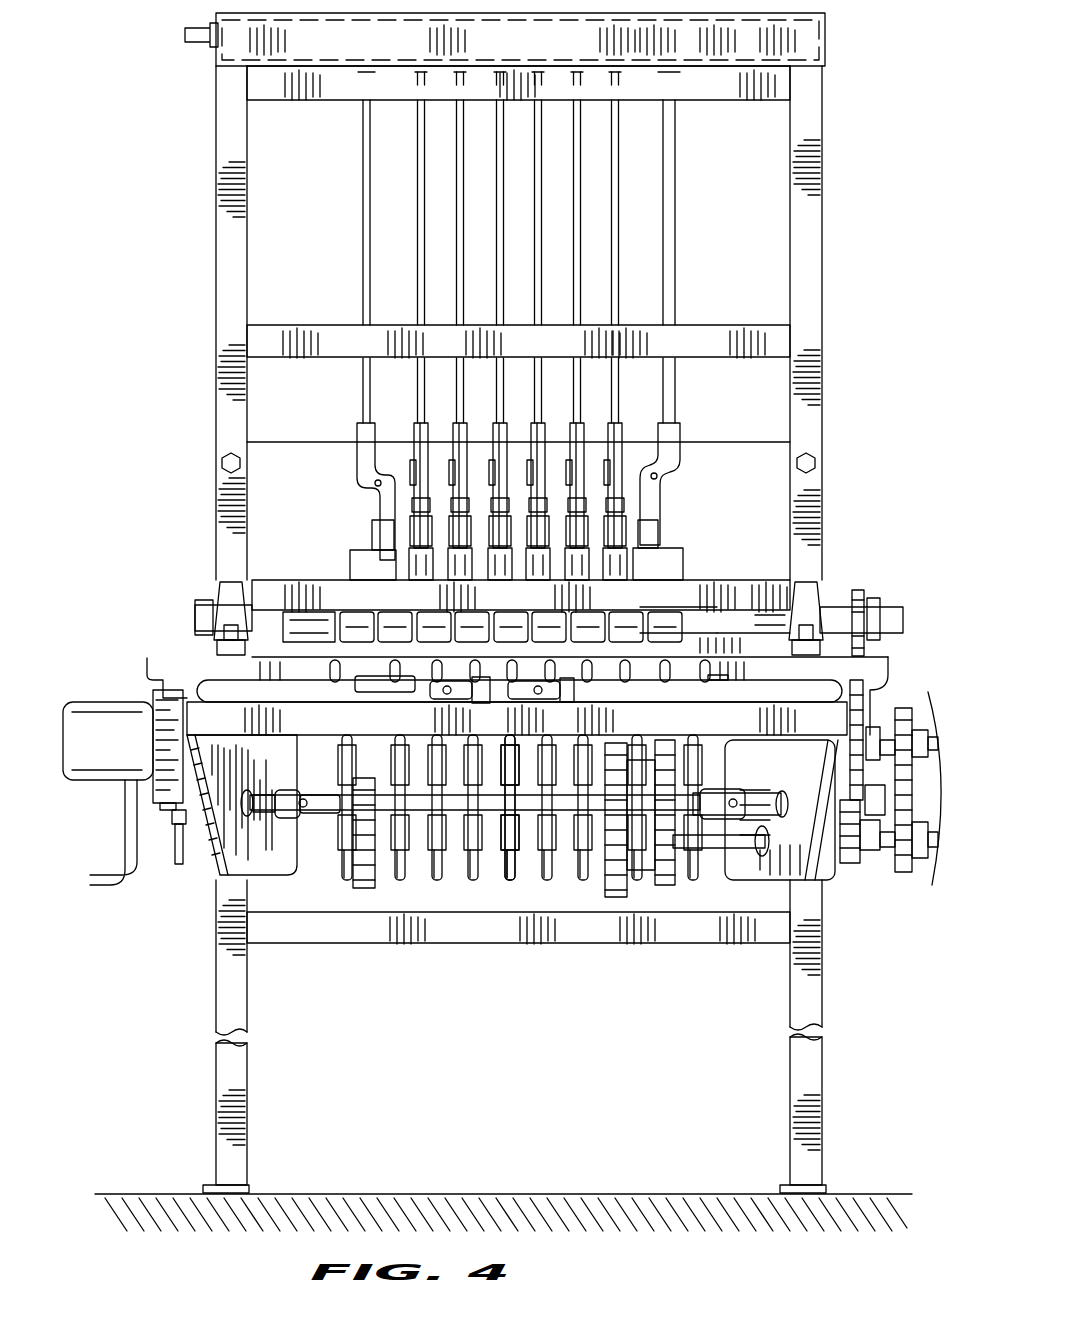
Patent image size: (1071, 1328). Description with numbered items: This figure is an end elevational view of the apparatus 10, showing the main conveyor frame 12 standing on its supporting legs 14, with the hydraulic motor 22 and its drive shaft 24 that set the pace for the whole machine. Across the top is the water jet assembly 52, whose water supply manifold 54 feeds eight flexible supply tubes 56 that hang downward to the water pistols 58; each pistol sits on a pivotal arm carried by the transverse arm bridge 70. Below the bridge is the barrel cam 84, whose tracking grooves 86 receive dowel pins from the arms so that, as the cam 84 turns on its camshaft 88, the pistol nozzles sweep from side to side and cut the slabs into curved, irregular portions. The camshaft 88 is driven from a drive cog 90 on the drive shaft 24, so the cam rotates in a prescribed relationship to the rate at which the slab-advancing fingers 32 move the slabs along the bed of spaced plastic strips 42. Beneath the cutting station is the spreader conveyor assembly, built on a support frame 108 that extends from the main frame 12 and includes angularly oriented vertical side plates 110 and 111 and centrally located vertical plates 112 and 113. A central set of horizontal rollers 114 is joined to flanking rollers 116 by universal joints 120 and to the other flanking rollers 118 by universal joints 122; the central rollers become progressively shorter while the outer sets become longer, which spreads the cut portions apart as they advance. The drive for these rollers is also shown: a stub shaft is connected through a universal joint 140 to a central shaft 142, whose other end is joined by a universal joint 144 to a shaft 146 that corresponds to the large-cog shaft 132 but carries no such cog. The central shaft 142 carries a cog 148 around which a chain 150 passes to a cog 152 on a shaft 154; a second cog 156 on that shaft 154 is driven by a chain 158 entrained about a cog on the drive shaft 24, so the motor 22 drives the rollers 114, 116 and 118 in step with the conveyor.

The apparatus 10 is at (198, 292).
The main conveyor frame 12 is at (455, 945).
The supporting legs 14 is at (245, 1138).
The hydraulic motor 22 is at (100, 705).
The drive shaft 24 is at (932, 740).
The slab-advancing fingers 32 is at (515, 882).
The plastic strips 42 is at (375, 680).
The water jet assembly 52 is at (670, 532).
The water supply manifold 54 is at (826, 40).
The flexible supply tubes 56 is at (372, 177).
The water pistols 58 is at (370, 530).
The arm bridge 70 is at (272, 580).
The barrel cam 84 is at (690, 628).
The tracking grooves 86 is at (535, 632).
The camshaft 88 is at (905, 613).
The drive cog 90 is at (903, 705).
The support frame 108 is at (208, 884).
The vertical side plate 110 is at (213, 862).
The vertical side plate 111 is at (765, 875).
The central vertical plate 112 is at (380, 880).
The central vertical plate 113 is at (670, 882).
The central rollers 114 is at (517, 680).
The rollers 116 is at (238, 708).
The rollers 118 is at (745, 702).
The universal joints 120 is at (432, 703).
The universal joints 122 is at (545, 702).
The shaft 132 is at (785, 800).
The universal joint 140 is at (742, 792).
The central shaft 142 is at (475, 860).
The universal joint 144 is at (352, 850).
The shaft 146 is at (280, 790).
The cog 148 is at (620, 750).
The chain 150 is at (655, 888).
The cog 152 is at (598, 890).
The shaft 154 is at (705, 882).
The cog 156 is at (905, 875).
The chain 158 is at (937, 858).